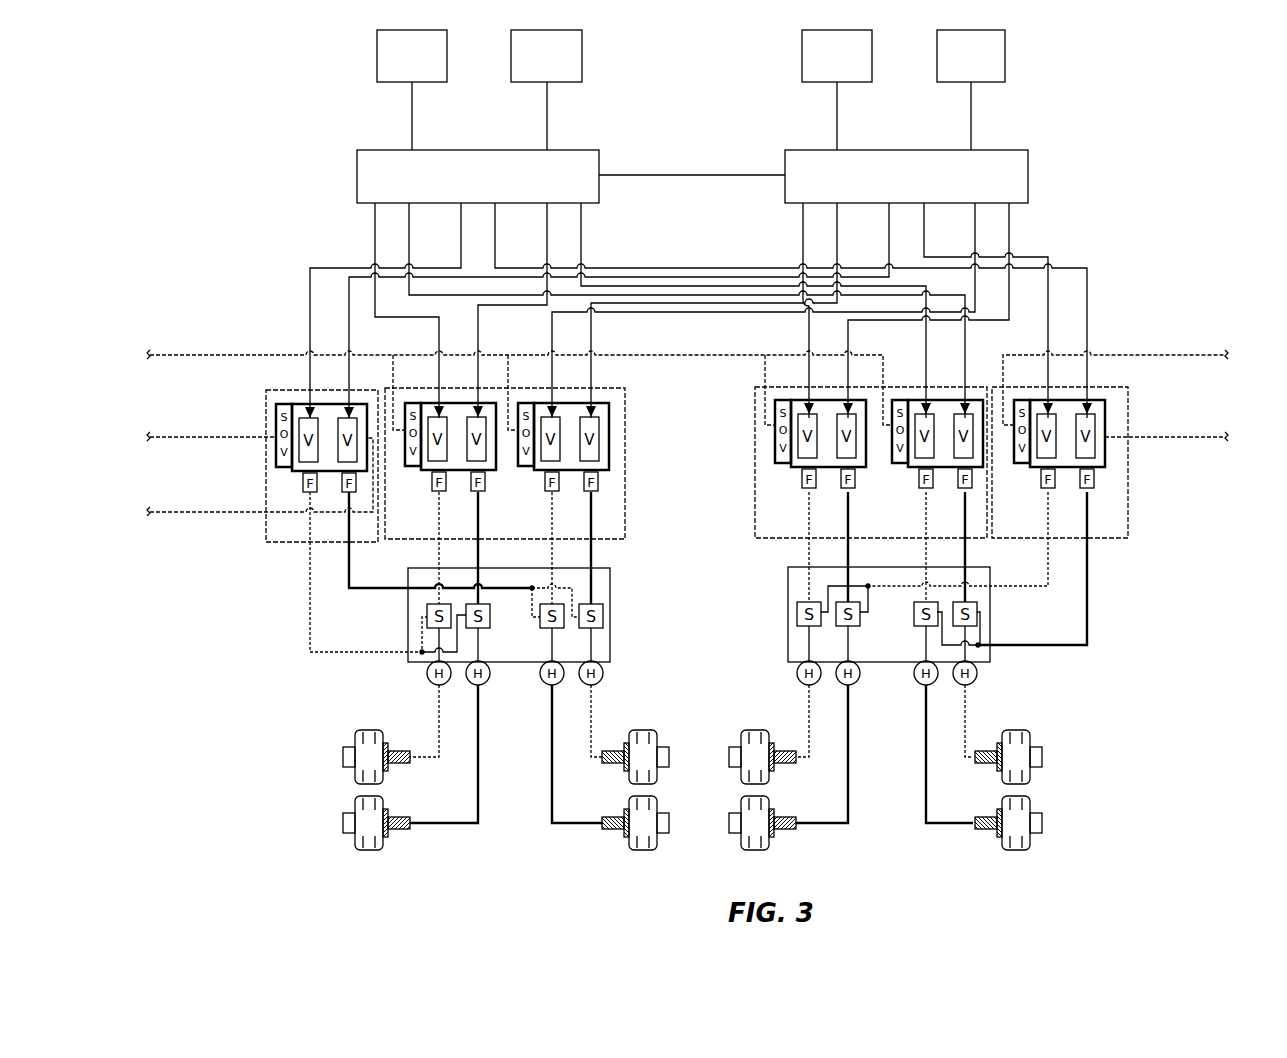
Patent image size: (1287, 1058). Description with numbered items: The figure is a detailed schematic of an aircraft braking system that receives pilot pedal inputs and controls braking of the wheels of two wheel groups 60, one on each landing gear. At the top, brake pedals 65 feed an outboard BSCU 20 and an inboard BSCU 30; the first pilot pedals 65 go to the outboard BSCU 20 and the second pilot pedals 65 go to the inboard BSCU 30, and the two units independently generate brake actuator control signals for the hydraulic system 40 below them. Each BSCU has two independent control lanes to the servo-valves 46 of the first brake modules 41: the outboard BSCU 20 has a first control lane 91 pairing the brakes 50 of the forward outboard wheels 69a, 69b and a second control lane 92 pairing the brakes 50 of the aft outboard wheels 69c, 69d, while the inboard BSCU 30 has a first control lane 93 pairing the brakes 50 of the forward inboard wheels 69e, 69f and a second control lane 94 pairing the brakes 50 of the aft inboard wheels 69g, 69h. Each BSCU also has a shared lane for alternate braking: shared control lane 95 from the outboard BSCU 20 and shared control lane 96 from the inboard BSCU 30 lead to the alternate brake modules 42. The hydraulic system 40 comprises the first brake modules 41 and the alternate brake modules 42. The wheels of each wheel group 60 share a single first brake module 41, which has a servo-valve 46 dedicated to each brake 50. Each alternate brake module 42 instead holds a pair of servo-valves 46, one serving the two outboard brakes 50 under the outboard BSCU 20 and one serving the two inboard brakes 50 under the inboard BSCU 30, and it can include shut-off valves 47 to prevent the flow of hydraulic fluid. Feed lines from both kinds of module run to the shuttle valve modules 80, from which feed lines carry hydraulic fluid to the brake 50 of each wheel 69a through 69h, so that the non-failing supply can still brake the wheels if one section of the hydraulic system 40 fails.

The outboard BSCU 20 is at (469, 184).
The inboard BSCU 30 is at (897, 184).
The hydraulic system 40 is at (1190, 551).
The first brake module 41 is at (625, 470).
The alternate brake module 42 is at (266, 478).
The servo-valve 46 is at (303, 490).
The shut-off valve 47 is at (285, 404).
The brake 50 is at (398, 767).
The wheel group 60 is at (258, 716).
The brake pedals 65 is at (403, 64).
The forward outboard wheel 69a is at (362, 731).
The forward outboard wheel 69b is at (1025, 731).
The aft outboard wheel 69c is at (362, 851).
The aft outboard wheel 69d is at (1025, 851).
The forward inboard wheel 69e is at (645, 731).
The forward inboard wheel 69f is at (762, 731).
The aft inboard wheel 69g is at (645, 851).
The aft inboard wheel 69h is at (759, 851).
The shuttle valve module 80 is at (610, 595).
The first control lane 91 is at (366, 224).
The second control lane 92 is at (603, 230).
The first control lane 93 is at (798, 223).
The second control lane 94 is at (1029, 230).
The shared control lane 95 is at (444, 250).
The shared control lane 96 is at (876, 250).